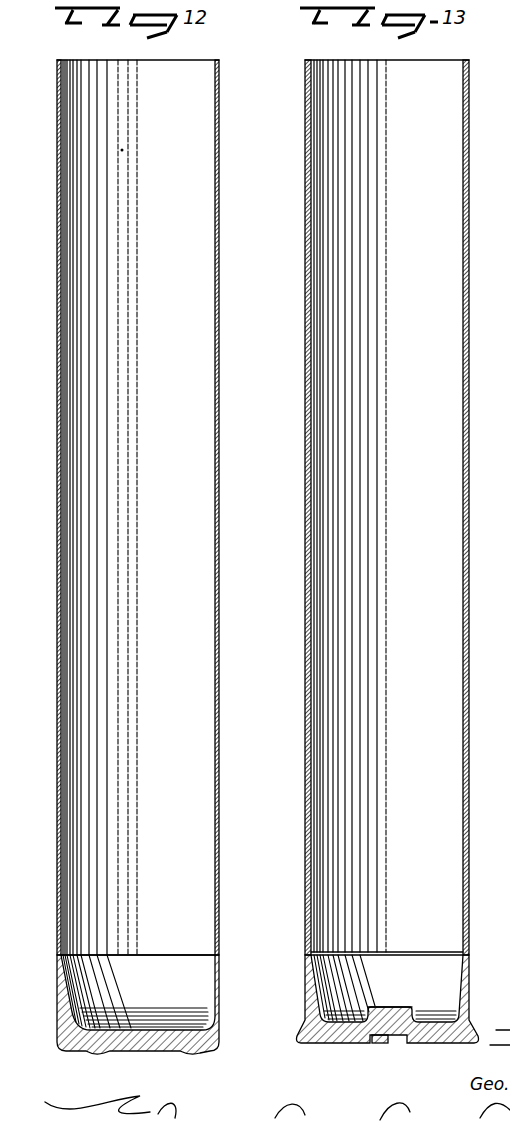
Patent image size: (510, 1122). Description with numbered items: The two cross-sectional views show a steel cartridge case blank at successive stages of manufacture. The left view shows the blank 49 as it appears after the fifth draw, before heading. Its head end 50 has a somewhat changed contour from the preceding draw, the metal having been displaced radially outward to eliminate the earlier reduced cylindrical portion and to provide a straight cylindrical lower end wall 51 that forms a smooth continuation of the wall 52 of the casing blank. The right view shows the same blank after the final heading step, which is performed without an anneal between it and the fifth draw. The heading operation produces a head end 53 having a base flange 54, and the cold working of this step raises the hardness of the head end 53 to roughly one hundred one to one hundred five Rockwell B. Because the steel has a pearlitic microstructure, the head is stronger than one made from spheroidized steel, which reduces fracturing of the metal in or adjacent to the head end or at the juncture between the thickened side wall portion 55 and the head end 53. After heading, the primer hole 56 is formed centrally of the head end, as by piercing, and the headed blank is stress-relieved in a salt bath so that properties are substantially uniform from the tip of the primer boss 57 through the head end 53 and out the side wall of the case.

In FIG. 12, the blank 49 is at (142, 507).
In FIG. 12, the head end 50 is at (121, 1015).
In FIG. 12, the straight cylindrical lower end wall 51 is at (60, 1022).
In FIG. 12, the wall 52 is at (60, 810).
In FIG. 13, the head end 53 is at (340, 1047).
In FIG. 13, the base flange 54 is at (365, 1012).
In FIG. 13, the thickened side wall portion 55 is at (310, 992).
In FIG. 13, the primer hole 56 is at (395, 1044).
In FIG. 13, the primer boss 57 is at (400, 1005).